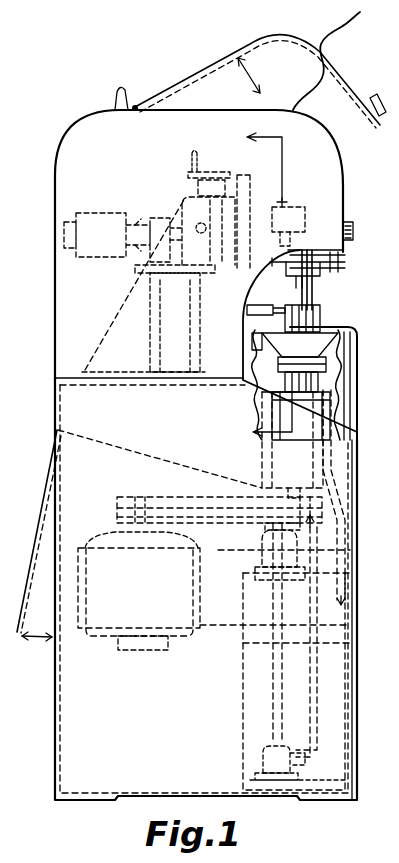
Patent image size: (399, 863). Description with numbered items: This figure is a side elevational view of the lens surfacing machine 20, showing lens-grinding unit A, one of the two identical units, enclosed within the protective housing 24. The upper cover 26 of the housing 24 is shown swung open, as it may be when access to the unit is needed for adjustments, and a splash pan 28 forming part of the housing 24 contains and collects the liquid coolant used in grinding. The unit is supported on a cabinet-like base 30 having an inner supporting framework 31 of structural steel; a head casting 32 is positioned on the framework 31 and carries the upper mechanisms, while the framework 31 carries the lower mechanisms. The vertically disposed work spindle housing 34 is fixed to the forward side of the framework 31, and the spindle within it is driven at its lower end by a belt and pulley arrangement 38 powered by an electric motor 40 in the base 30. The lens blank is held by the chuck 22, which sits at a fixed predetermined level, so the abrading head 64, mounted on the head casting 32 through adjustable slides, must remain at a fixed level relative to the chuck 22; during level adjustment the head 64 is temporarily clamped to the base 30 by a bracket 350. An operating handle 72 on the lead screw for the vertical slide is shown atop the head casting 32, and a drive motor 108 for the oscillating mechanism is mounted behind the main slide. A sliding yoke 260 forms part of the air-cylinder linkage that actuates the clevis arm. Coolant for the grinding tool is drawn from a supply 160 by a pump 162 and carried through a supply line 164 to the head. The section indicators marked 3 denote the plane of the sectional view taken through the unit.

The surfacing machine 20 is at (154, 52).
The protective housing 24 is at (68, 171).
The upper cover 26 is at (345, 62).
The section line 3 is at (278, 285).
The operating handle 72 is at (208, 172).
The drive motor 108 is at (95, 212).
The head casting 32 is at (115, 318).
The sliding yoke 260 is at (345, 256).
The abrading head 64 is at (321, 299).
The lens-grinding unit A is at (331, 309).
The splash pan 28 is at (352, 347).
The lens blank supporting chuck 22 is at (331, 362).
The work spindle housing 34 is at (337, 390).
The bracket 350 is at (268, 398).
The inner supporting framework 31 is at (137, 386).
The cabinet-like base 30 is at (82, 460).
The belt and pulley arrangement 38 is at (215, 514).
The electric motor 40 is at (100, 632).
The supply line 164 is at (315, 658).
The coolant supply 160 is at (262, 713).
The pump 162 is at (283, 763).